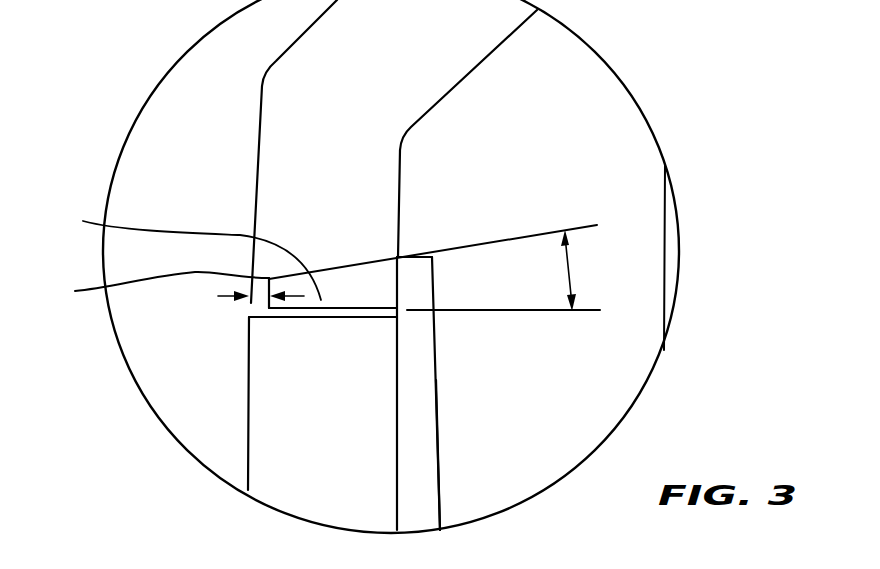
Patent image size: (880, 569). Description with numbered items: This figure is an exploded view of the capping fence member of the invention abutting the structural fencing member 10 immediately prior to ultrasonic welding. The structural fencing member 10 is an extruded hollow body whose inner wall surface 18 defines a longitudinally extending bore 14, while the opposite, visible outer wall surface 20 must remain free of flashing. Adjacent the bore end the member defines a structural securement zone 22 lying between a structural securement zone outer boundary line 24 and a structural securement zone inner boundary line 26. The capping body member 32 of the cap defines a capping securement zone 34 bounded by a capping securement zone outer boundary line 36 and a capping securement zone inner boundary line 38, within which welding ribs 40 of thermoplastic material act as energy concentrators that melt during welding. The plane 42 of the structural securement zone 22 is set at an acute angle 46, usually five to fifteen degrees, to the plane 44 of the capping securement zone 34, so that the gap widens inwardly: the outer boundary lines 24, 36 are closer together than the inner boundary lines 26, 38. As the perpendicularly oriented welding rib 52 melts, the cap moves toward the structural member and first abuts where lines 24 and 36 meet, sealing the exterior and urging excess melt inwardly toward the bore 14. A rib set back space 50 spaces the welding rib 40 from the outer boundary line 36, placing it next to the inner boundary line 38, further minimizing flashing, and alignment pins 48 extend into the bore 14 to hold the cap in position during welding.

The structural fencing member 10 is at (274, 494).
The longitudinally extending bore 14 is at (398, 441).
The inner wall surface 18 is at (395, 484).
The outer wall surface 20 is at (247, 395).
The structural securement zone 22 is at (362, 320).
The structural securement zone outer boundary line 24 is at (251, 320).
The structural securement zone inner boundary line 26 is at (398, 320).
The capping body member 32 is at (327, 107).
The capping securement zone 34 is at (343, 262).
The capping securement zone outer boundary line 36 is at (154, 288).
The capping securement zone inner boundary line 38 is at (397, 256).
The welding rib 40 is at (346, 298).
The plane of the structural securement zone 42 is at (608, 327).
The plane of the capping securement zone 44 is at (608, 237).
The angle 46 is at (480, 297).
The alignment pin 48 is at (493, 421).
The rib set back space 50 is at (218, 296).
The perpendicularly oriented welding rib 52 is at (185, 250).